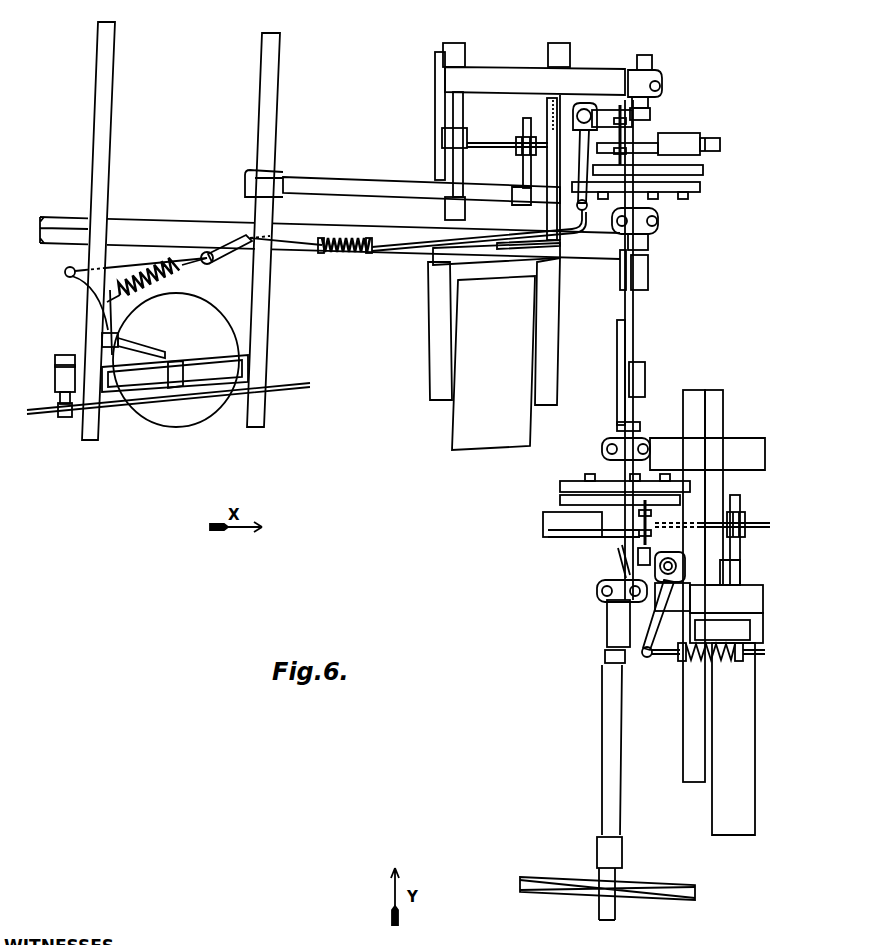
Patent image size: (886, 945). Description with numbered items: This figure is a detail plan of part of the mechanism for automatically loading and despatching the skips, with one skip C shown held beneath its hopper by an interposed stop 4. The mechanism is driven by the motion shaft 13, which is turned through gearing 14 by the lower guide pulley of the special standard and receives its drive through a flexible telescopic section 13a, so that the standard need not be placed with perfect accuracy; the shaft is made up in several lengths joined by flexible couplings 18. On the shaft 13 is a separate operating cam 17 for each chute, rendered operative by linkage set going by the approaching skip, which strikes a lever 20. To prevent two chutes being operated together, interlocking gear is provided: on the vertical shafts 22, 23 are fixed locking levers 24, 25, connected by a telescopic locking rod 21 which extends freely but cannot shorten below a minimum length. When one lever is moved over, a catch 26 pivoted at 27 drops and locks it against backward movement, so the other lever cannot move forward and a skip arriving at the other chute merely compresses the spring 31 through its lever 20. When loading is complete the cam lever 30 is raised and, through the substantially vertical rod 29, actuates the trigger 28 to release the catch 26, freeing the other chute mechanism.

The stop 4 is at (68, 380).
The shaft 13 is at (615, 567).
The flexible telescopic section 13a is at (615, 760).
The gearing 14 is at (652, 893).
The operating cam 17 is at (690, 175).
The flexible coupling 18 is at (645, 273).
The lever 20 is at (176, 363).
The locking rod 21 is at (626, 340).
The vertical shaft 22 is at (680, 560).
The vertical shaft 23 is at (588, 110).
The locking lever 24 is at (648, 560).
The locking lever 25 is at (614, 118).
The catch 26 is at (644, 112).
The pivot 27 is at (630, 90).
The trigger 28 is at (624, 140).
The vertical rod 29 is at (690, 136).
The cam lever 30 is at (478, 143).
The spring 31 is at (354, 256).
The skip C is at (205, 405).